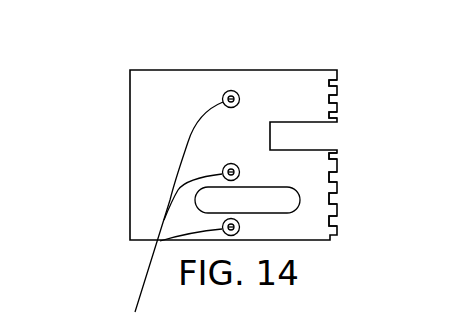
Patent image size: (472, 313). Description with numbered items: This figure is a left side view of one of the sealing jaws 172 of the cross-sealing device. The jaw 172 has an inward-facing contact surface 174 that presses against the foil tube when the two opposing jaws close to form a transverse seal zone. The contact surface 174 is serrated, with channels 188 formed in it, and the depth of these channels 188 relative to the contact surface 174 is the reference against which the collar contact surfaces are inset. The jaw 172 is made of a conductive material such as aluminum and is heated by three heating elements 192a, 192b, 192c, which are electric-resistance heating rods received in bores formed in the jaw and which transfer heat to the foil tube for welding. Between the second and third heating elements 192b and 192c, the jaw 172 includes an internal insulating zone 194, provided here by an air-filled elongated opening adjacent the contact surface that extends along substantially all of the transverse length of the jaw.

The sealing jaw 172 is at (147, 68).
The contact surface 174 is at (342, 98).
The channels 188 is at (338, 200).
The insulating zone 194 is at (287, 190).
The first heating element 192a is at (233, 90).
The second heating element 192b is at (231, 163).
The third heating element 192c is at (240, 229).